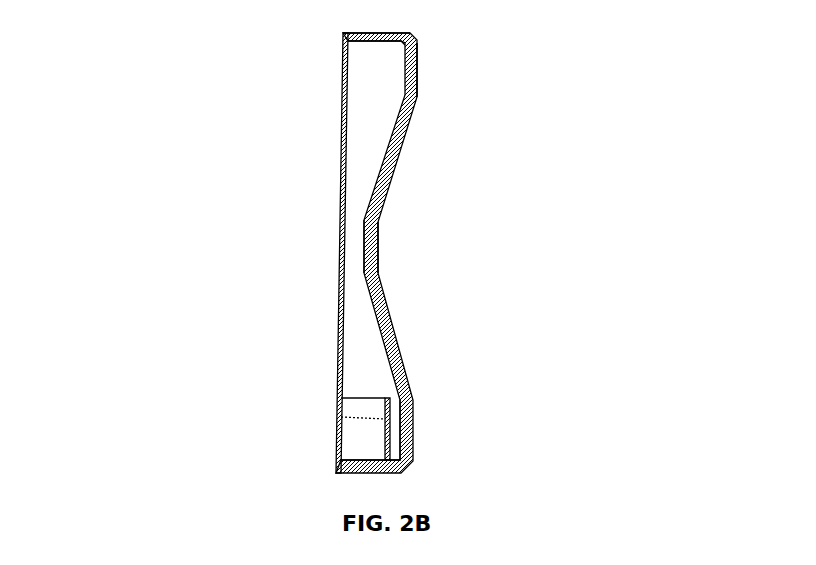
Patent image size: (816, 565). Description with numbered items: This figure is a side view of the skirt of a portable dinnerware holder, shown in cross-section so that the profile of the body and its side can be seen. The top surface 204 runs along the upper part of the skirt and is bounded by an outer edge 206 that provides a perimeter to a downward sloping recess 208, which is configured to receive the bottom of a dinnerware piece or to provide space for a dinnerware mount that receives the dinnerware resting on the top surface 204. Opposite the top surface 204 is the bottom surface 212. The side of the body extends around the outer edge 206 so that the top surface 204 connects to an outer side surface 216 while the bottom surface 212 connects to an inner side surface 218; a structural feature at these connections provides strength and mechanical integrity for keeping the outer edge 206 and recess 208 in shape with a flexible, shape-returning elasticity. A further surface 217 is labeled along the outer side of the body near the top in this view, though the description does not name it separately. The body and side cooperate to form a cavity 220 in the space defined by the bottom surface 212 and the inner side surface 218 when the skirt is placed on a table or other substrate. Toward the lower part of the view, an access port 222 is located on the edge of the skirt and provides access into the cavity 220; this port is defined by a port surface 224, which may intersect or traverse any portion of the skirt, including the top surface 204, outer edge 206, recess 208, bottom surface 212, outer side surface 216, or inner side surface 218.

The top surface 204 is at (380, 251).
The outer edge 206 is at (407, 85).
The recess 208 is at (378, 218).
The bottom surface 212 is at (366, 268).
The outer side surface 216 is at (400, 34).
The outer surface 217 is at (415, 53).
The inner side surface 218 is at (398, 37).
The cavity 220 is at (354, 123).
The access port 222 is at (358, 460).
The port surface 224 is at (385, 418).